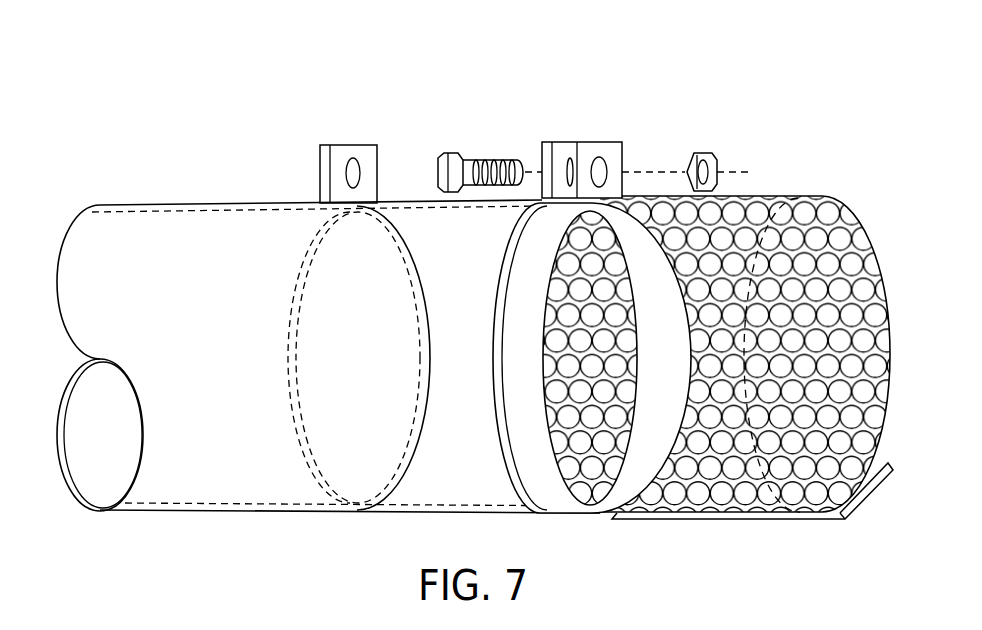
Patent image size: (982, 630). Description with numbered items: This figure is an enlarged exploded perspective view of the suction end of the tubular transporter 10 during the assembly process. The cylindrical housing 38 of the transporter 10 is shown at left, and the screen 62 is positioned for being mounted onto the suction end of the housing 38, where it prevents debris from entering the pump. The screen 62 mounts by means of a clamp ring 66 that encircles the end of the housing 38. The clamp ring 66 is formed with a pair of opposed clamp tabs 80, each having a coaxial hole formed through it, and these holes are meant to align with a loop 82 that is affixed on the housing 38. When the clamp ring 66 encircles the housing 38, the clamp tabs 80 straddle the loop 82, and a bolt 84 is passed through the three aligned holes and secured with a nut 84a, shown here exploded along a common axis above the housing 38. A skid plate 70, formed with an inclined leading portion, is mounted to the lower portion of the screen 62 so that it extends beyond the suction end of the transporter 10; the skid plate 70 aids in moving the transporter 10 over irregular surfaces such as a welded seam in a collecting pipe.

The tubular transporter 10 is at (697, 78).
The cylindrical housing 38 is at (193, 227).
The screen 62 is at (792, 193).
The clamp ring 66 is at (512, 318).
The skid plate 70 is at (875, 485).
The clamp tabs 80 is at (613, 148).
The loop 82 is at (340, 157).
The bolt 84 is at (468, 163).
The nut 84a is at (705, 152).